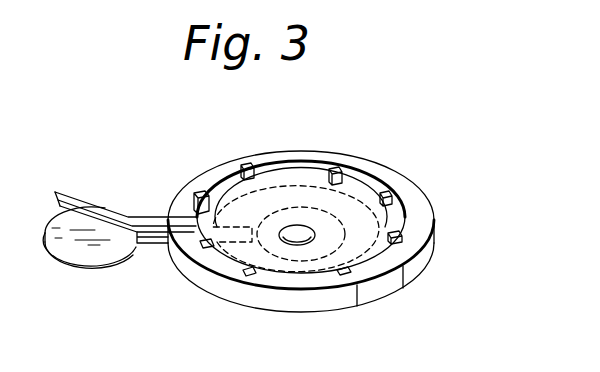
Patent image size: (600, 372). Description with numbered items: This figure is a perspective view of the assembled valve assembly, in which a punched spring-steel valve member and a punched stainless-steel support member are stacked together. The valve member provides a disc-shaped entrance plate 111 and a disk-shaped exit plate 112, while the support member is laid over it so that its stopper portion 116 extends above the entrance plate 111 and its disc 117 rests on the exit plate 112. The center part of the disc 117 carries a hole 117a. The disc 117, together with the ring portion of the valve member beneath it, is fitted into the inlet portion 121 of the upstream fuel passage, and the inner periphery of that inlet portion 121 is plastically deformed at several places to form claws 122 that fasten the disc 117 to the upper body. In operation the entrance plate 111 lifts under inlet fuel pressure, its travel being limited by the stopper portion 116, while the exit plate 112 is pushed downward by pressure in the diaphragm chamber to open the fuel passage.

The entrance plate 111 is at (92, 250).
The exit plate 112 is at (297, 247).
The stopper portion 116 is at (78, 191).
The disc 117 is at (268, 190).
The hole 117a is at (301, 227).
The inlet portion 121 is at (404, 196).
The claws 122 is at (337, 168).